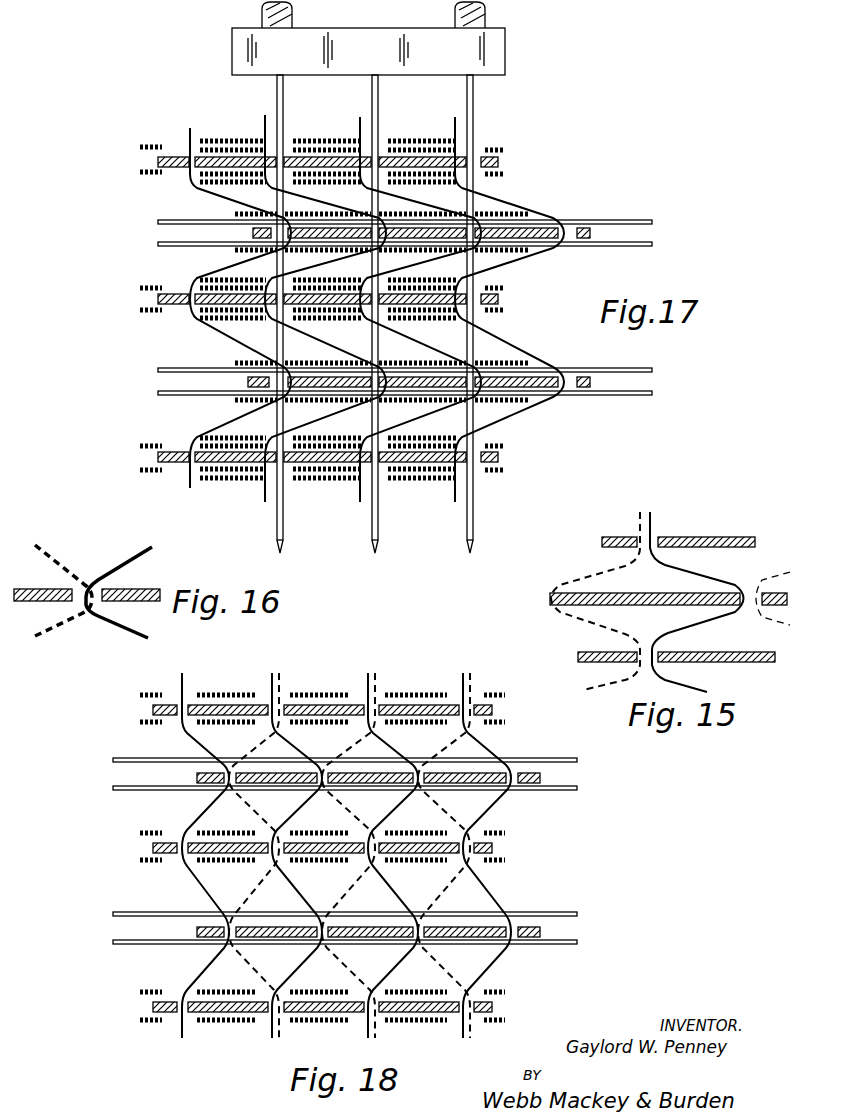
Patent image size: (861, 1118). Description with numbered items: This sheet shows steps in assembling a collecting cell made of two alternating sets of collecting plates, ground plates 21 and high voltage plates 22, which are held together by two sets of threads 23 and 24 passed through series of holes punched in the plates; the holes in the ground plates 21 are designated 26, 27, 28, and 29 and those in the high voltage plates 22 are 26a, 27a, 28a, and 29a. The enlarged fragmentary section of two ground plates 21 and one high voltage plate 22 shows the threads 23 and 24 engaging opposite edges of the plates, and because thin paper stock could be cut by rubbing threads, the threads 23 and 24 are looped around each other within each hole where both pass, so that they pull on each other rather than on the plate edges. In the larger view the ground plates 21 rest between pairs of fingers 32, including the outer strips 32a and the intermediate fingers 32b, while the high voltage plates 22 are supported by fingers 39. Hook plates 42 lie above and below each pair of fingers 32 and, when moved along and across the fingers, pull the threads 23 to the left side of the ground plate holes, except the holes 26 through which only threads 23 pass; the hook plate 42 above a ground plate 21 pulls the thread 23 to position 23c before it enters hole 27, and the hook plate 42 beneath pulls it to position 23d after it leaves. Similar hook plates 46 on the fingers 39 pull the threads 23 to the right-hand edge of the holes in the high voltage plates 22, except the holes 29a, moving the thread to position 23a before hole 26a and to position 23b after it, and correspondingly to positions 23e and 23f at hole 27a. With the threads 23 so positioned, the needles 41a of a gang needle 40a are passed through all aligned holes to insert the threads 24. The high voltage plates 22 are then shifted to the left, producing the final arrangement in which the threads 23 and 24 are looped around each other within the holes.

In FIG. 17, the ground plates 21 is at (500, 162).
In FIG. 15, the ground plates 21 is at (602, 542).
In FIG. 18, the ground plates 21 is at (493, 710).
In FIG. 17, the high voltage plates 22 is at (582, 232).
In FIG. 15, the high voltage plates 22 is at (548, 599).
In FIG. 18, the high voltage plates 22 is at (545, 778).
In FIG. 17, the threads 23 is at (190, 128).
In FIG. 16, the threads 23 is at (139, 548).
In FIG. 15, the threads 23 is at (657, 517).
In FIG. 18, the threads 23 is at (183, 680).
In FIG. 17, the thread position 23a is at (291, 235).
In FIG. 17, the thread position 23b is at (275, 250).
In FIG. 17, the thread position 23c is at (266, 128).
In FIG. 17, the thread position 23d is at (268, 188).
In FIG. 17, the thread position 23e is at (386, 235).
In FIG. 17, the thread position 23f is at (386, 250).
In FIG. 16, the threads 24 is at (58, 548).
In FIG. 15, the threads 24 is at (634, 518).
In FIG. 18, the threads 24 is at (281, 679).
In FIG. 17, the series of holes 26 is at (186, 170).
In FIG. 18, the series of holes 26 is at (182, 718).
In FIG. 17, the series of holes 26a is at (252, 233).
In FIG. 18, the series of holes 26a is at (236, 790).
In FIG. 17, the series of holes 27 is at (297, 120).
In FIG. 18, the series of holes 27 is at (272, 858).
In FIG. 17, the series of holes 27a is at (374, 258).
In FIG. 18, the series of holes 27a is at (332, 790).
In FIG. 17, the series of holes 28 is at (420, 309).
In FIG. 18, the series of holes 28 is at (368, 858).
In FIG. 18, the series of holes 28a is at (427, 790).
In FIG. 17, the series of holes 29 is at (509, 309).
In FIG. 18, the series of holes 29 is at (463, 858).
In FIG. 17, the series of holes 29a is at (566, 244).
In FIG. 18, the series of holes 29a is at (516, 792).
In FIG. 17, the fingers 32 is at (125, 160).
In FIG. 18, the fingers 32 is at (140, 694).
In FIG. 17, the outer pairs of strips 32a is at (140, 470).
In FIG. 18, the outer pairs of strips 32a is at (140, 993).
In FIG. 17, the intermediate pair of fingers 32b is at (245, 482).
In FIG. 18, the intermediate pair of fingers 32b is at (232, 1022).
In FIG. 17, the fingers 39 is at (158, 244).
In FIG. 18, the fingers 39 is at (113, 761).
In FIG. 17, the gang needle 40a is at (505, 52).
In FIG. 17, the needles 41a is at (277, 530).
In FIG. 17, the hook plates 42 is at (232, 140).
In FIG. 17, the hook plates 46 is at (512, 215).